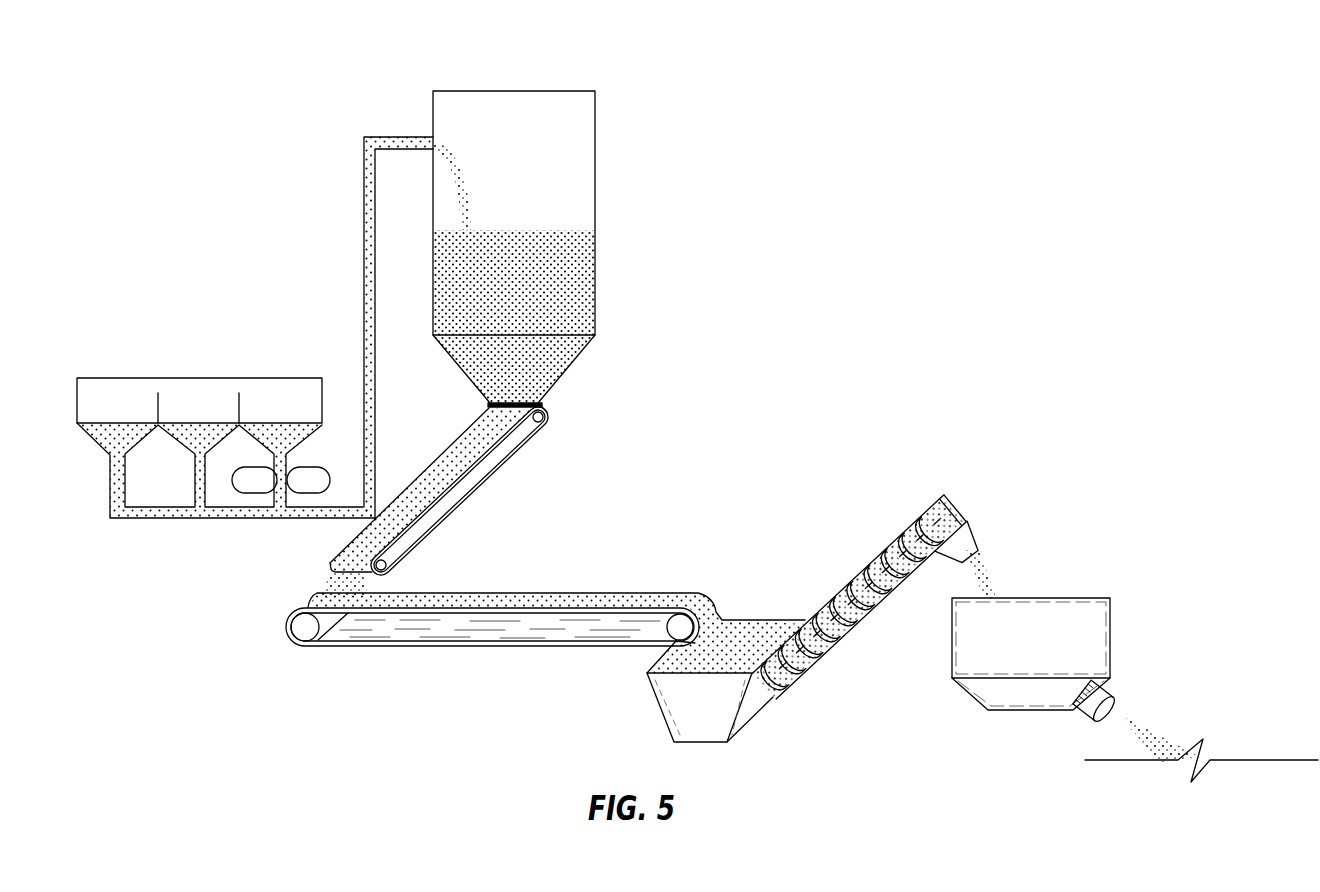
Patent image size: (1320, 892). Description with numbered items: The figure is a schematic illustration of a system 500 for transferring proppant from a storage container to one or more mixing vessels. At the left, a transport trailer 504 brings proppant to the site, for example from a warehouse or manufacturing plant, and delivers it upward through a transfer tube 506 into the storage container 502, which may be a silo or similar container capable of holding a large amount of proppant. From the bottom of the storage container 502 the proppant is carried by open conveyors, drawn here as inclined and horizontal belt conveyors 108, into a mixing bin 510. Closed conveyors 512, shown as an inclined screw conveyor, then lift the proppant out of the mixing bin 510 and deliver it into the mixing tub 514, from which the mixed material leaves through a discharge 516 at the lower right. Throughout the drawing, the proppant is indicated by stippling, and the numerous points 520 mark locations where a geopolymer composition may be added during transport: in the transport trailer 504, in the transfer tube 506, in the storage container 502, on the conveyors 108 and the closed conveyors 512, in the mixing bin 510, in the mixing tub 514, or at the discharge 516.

The system 500 is at (176, 86).
The storage container 502 is at (571, 91).
The transport trailer 504 is at (108, 378).
The transfer tube 506 is at (364, 152).
The conveyor belt 108 is at (511, 457).
The mixing bin 510 is at (752, 720).
The closed conveyors 512 is at (917, 518).
The mixing tub 514 is at (1030, 712).
The discharge 516 is at (1112, 695).
The points 520 is at (366, 232).